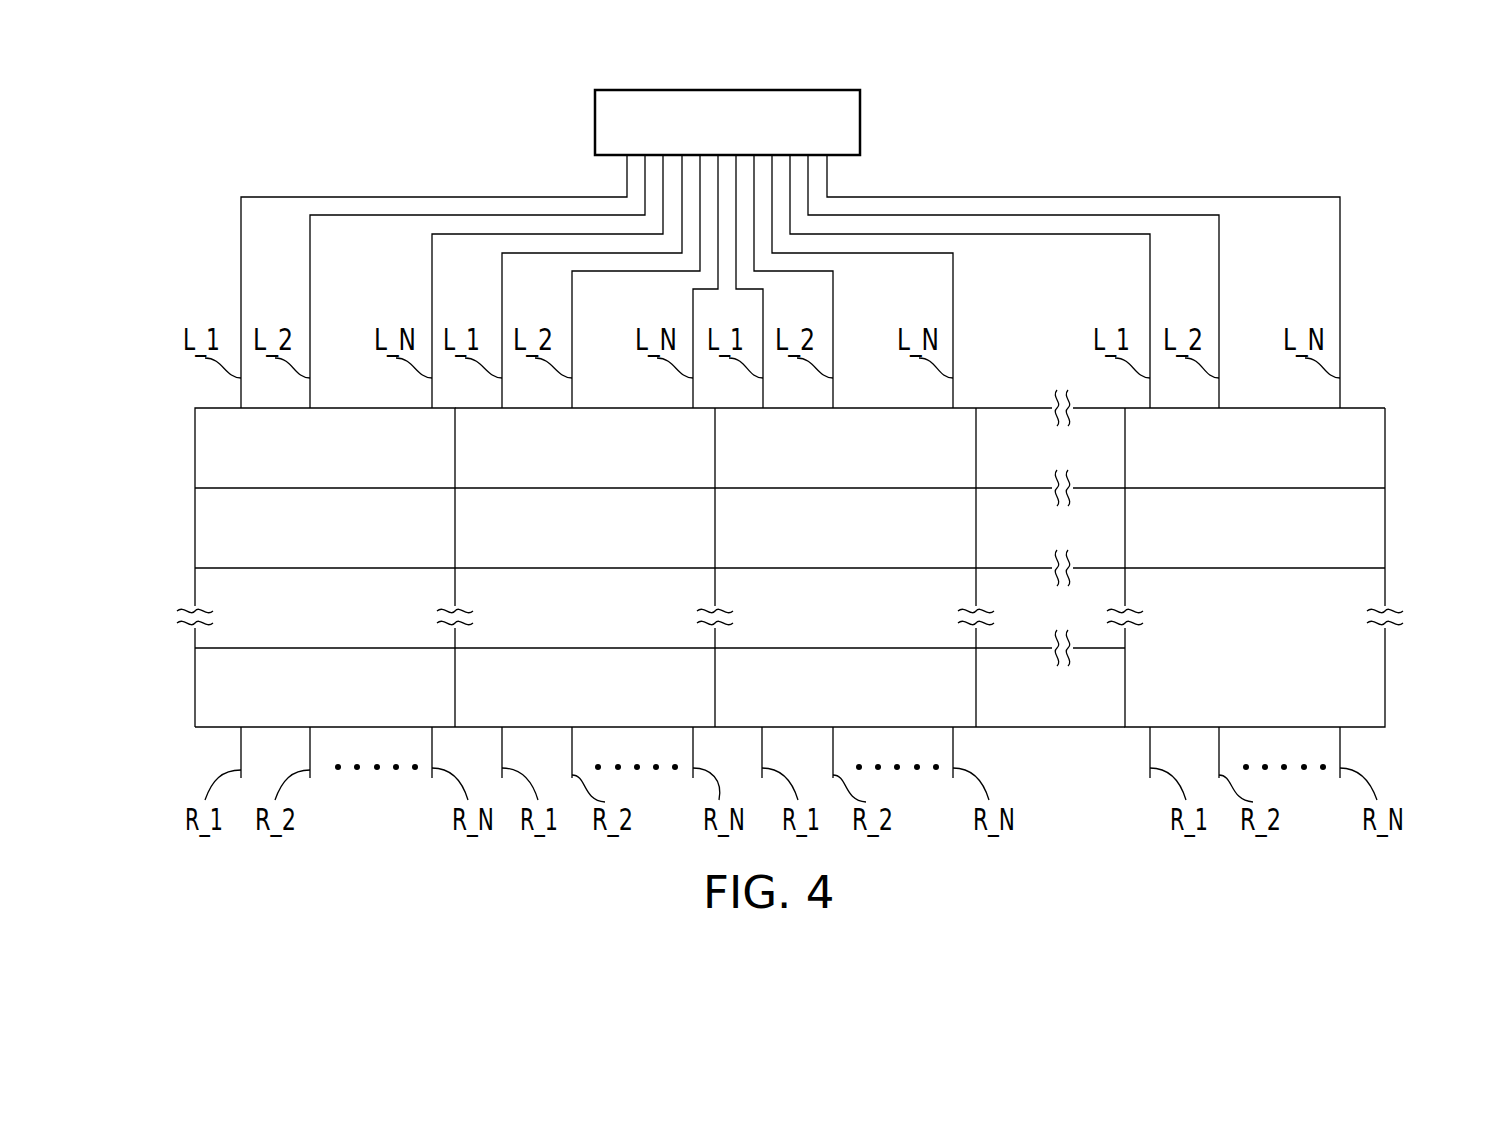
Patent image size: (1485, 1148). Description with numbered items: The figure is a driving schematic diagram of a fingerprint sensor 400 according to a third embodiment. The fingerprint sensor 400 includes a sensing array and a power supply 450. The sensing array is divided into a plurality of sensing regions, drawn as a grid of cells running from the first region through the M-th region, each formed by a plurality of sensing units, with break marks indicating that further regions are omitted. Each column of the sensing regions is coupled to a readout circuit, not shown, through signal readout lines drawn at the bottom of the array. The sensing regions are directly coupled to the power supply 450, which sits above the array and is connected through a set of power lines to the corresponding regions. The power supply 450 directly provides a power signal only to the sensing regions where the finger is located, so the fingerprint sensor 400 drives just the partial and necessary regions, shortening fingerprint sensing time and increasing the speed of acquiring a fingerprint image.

The power supply 450 is at (862, 122).
The fingerprint sensor 400 is at (785, 631).